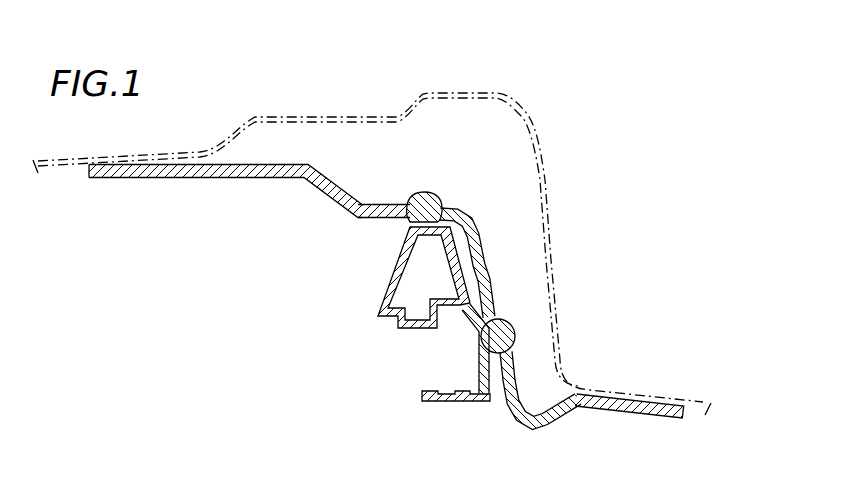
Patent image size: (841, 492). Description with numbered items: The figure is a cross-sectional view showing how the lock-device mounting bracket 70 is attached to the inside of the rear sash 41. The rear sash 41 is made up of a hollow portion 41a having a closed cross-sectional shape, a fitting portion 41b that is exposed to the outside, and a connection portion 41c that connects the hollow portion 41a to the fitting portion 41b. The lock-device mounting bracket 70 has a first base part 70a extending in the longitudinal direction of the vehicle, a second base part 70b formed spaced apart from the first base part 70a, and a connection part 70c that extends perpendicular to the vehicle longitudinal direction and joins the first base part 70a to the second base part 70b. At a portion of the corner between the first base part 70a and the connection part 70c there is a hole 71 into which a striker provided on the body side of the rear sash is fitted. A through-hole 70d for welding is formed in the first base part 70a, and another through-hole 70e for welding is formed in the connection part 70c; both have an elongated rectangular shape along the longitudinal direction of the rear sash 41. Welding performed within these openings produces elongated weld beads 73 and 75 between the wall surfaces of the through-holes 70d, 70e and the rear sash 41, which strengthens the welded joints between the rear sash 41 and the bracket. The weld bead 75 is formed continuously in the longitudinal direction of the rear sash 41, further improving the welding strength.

The rear sash 41 is at (386, 327).
The hollow portion 41a is at (380, 313).
The fitting portion 41b is at (425, 397).
The connection portion 41c is at (478, 350).
The lock-device mounting bracket 70 is at (386, 305).
The first base part 70a is at (337, 178).
The second base part 70b is at (620, 395).
The connection part 70c is at (487, 267).
The through-hole 70d is at (370, 215).
The through-hole 70e is at (533, 429).
The hole 71 is at (327, 116).
The weld bead 73 is at (408, 214).
The weld bead 75 is at (507, 354).